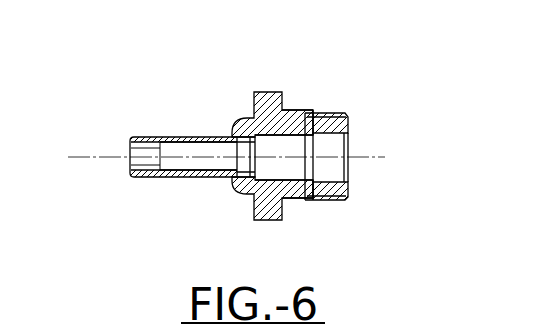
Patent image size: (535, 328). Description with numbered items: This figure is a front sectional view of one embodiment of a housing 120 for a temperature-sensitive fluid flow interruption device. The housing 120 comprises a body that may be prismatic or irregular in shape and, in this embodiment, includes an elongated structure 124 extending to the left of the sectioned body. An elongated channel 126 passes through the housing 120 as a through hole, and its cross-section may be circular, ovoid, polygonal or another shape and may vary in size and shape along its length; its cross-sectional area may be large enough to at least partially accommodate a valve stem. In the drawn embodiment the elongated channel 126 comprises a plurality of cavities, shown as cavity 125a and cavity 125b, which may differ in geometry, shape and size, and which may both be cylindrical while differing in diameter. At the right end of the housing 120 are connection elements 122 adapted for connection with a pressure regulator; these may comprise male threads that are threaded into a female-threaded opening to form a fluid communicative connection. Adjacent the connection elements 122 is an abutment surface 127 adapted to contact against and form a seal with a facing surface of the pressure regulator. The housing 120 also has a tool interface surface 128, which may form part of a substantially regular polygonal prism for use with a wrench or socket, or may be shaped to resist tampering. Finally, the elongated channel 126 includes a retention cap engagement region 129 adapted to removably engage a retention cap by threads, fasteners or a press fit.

The housing 120 is at (168, 85).
The connection elements 122 is at (337, 113).
The elongated structure 124 is at (143, 136).
The cavity 125a is at (157, 168).
The cavity 125b is at (291, 160).
The elongated channel 126 is at (219, 163).
The abutment surface 127 is at (300, 112).
The tool interface surface 128 is at (268, 92).
The retention cap engagement region 129 is at (346, 160).